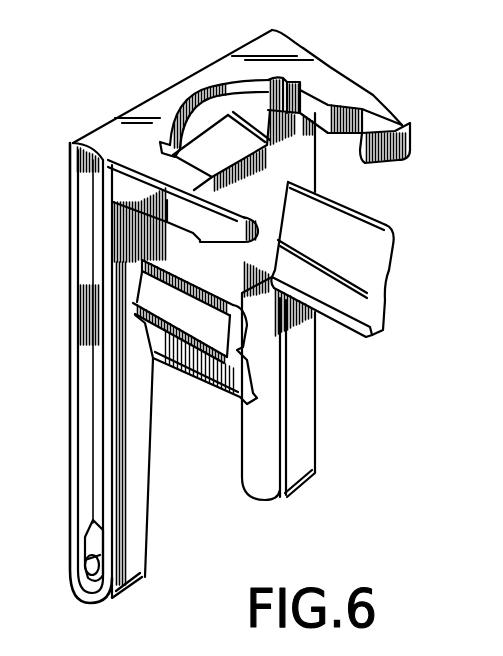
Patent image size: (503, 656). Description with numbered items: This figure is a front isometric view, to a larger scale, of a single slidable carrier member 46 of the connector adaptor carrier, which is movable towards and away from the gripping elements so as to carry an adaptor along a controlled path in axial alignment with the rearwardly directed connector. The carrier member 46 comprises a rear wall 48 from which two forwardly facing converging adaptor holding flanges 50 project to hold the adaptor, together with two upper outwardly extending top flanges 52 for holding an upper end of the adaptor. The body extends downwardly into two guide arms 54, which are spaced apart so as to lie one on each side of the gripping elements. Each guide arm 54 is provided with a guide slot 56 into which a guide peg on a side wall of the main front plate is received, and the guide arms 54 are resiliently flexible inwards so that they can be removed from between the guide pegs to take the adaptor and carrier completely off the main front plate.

The carrier member 46 is at (380, 87).
The rear wall 48 is at (137, 238).
The adaptor holding flanges 50 is at (393, 257).
The top flanges 52 is at (385, 120).
The guide arms 54 is at (130, 548).
The guide slot 56 is at (87, 453).